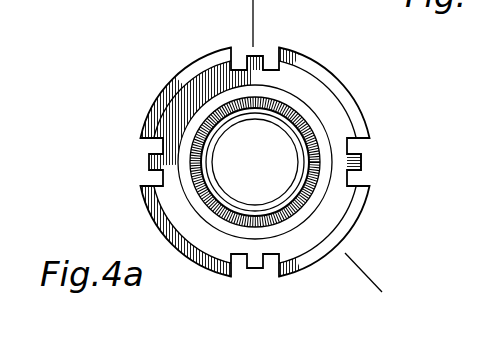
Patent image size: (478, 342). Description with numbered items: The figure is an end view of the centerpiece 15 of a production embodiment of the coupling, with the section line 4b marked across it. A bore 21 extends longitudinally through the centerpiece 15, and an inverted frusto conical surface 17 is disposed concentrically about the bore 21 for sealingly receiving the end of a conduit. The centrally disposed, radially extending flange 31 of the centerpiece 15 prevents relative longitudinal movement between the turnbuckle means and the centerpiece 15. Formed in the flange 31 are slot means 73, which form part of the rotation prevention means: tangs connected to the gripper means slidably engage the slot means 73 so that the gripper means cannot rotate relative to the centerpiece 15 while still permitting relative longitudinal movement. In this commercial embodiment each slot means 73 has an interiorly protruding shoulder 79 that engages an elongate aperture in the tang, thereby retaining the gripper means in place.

The centerpiece 15 is at (161, 56).
The inverted frusto conical surface 17 is at (297, 112).
The bore 21 is at (243, 167).
The radially extending flange 31 is at (165, 93).
The interiorly protruding shoulder 79 is at (362, 160).
The slot means 73 is at (357, 177).
The section line 4b is at (257, 17).